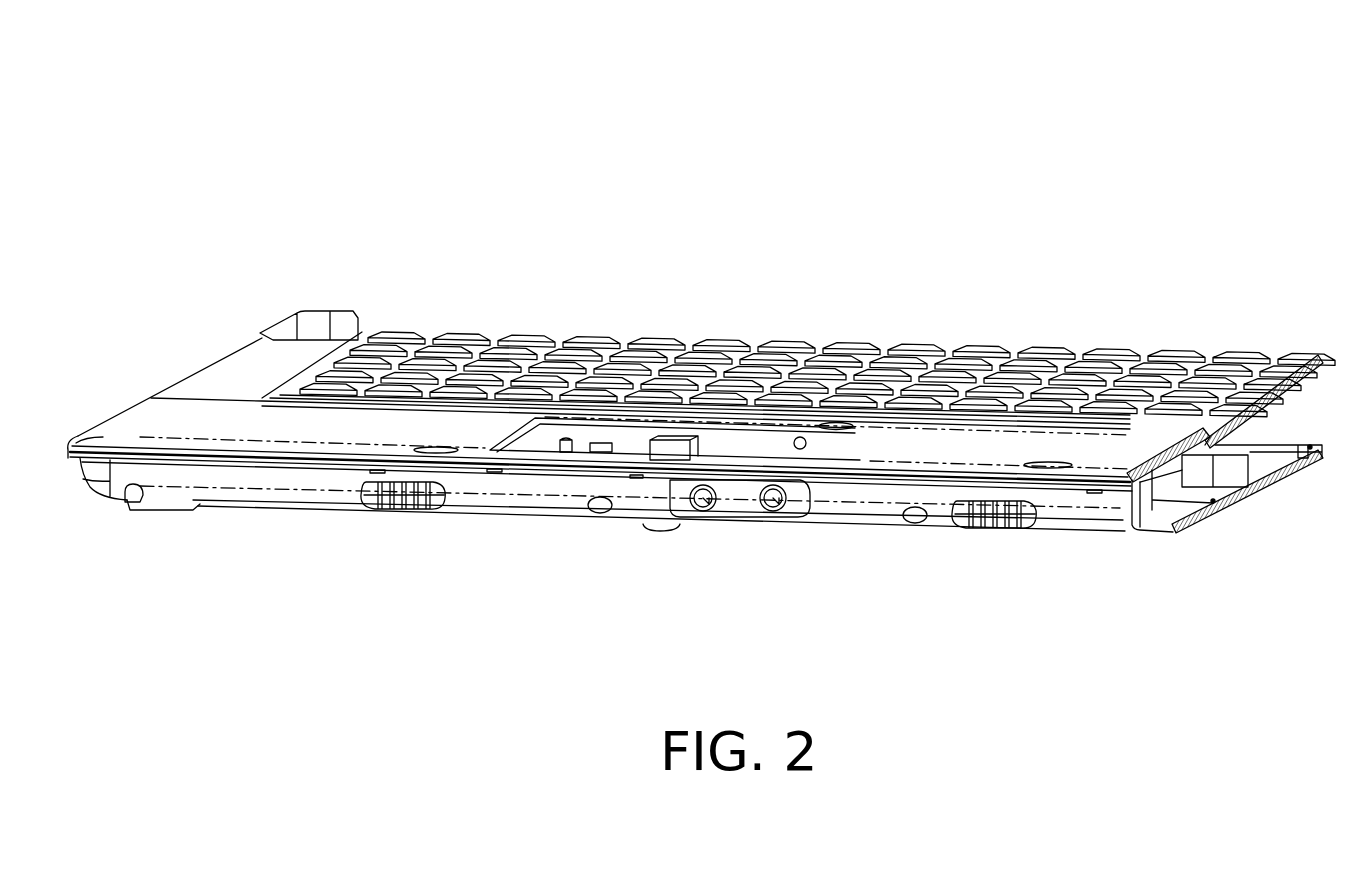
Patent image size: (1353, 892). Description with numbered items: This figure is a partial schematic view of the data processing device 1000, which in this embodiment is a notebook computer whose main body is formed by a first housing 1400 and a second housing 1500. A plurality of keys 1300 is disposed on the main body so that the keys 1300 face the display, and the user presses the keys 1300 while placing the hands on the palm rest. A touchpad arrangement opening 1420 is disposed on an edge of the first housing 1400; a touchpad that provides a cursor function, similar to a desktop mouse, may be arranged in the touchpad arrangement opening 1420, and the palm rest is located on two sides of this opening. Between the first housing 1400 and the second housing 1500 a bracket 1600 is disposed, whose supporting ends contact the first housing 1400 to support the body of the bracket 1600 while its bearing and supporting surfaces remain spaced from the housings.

The data processing device 1000 is at (500, 183).
The keys 1300 is at (923, 347).
The first housing 1400 is at (1133, 440).
The touchpad arrangement opening 1420 is at (718, 447).
The second housing 1500 is at (1122, 527).
The bracket 1600 is at (1270, 413).